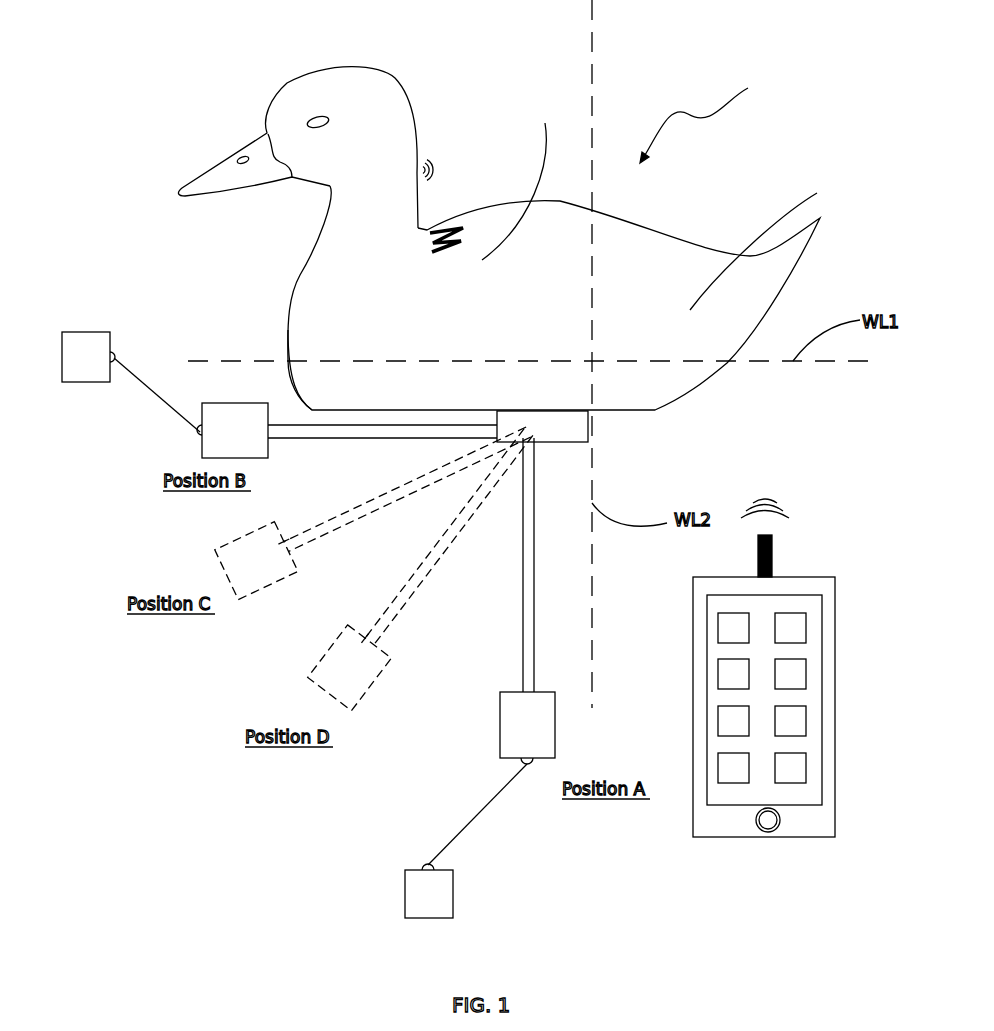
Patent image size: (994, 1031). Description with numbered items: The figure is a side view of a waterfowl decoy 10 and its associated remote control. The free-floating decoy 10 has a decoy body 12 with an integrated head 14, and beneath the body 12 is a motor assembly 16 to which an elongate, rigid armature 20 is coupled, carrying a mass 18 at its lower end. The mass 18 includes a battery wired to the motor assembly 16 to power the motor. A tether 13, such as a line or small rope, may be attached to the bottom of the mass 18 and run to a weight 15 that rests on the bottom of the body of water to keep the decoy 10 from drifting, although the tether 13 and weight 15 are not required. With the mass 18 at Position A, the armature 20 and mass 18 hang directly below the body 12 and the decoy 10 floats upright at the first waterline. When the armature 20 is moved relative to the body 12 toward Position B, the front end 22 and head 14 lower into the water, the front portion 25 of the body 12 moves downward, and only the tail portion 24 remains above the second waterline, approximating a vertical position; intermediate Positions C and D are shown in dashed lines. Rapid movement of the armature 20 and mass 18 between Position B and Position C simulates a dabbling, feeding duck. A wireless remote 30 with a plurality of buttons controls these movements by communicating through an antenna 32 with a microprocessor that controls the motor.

The waterfowl decoy 10 is at (704, 114).
The decoy body 12 is at (670, 228).
The tether 13 is at (160, 402).
The head 14 is at (407, 92).
The weight 15 is at (95, 332).
The motor assembly 16 is at (588, 443).
The mass 18 is at (500, 722).
The armature 20 is at (370, 437).
The front end 22 is at (288, 322).
The tail portion 24 is at (767, 246).
The front portion 25 is at (514, 181).
The wireless remote 30 is at (805, 577).
The antenna 32 is at (417, 170).